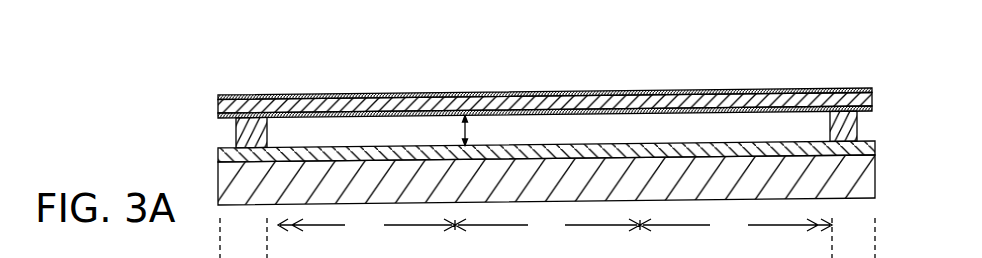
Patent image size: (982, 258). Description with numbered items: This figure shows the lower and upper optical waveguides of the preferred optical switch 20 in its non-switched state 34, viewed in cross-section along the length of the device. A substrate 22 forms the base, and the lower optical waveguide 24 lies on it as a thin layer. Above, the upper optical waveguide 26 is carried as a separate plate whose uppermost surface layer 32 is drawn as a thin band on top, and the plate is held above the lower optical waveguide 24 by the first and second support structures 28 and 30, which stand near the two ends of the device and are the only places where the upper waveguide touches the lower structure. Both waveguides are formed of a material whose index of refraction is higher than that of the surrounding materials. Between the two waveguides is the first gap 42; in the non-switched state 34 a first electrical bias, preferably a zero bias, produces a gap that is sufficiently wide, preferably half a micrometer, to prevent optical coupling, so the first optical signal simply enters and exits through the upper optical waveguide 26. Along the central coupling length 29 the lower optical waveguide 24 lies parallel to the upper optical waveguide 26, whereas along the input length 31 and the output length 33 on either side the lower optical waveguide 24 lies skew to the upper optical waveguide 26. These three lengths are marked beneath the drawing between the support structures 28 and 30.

The optical switch 20 is at (637, 55).
The substrate 22 is at (218, 170).
The lower optical waveguide 24 is at (218, 151).
The upper optical waveguide 26 is at (218, 112).
The first support structure 28 is at (257, 142).
The coupling length 29 is at (547, 227).
The second support structure 30 is at (831, 124).
The input length 31 is at (366, 227).
The plate top layer 32 is at (335, 94).
The output length 33 is at (736, 227).
The non-switched state 34 is at (688, 57).
The first gap 42 is at (462, 129).